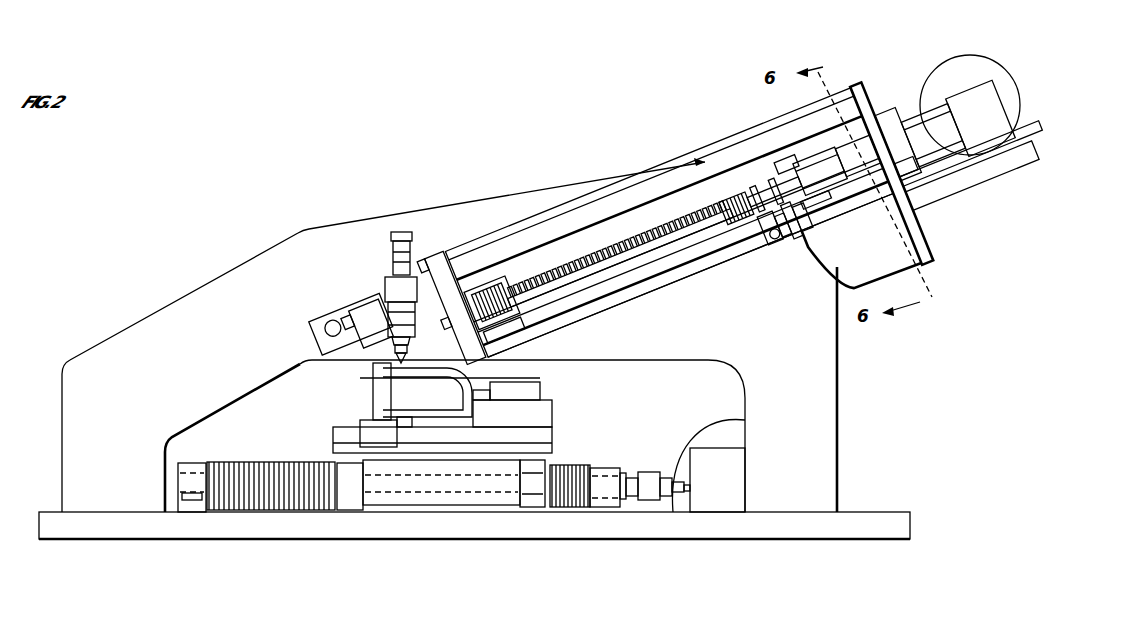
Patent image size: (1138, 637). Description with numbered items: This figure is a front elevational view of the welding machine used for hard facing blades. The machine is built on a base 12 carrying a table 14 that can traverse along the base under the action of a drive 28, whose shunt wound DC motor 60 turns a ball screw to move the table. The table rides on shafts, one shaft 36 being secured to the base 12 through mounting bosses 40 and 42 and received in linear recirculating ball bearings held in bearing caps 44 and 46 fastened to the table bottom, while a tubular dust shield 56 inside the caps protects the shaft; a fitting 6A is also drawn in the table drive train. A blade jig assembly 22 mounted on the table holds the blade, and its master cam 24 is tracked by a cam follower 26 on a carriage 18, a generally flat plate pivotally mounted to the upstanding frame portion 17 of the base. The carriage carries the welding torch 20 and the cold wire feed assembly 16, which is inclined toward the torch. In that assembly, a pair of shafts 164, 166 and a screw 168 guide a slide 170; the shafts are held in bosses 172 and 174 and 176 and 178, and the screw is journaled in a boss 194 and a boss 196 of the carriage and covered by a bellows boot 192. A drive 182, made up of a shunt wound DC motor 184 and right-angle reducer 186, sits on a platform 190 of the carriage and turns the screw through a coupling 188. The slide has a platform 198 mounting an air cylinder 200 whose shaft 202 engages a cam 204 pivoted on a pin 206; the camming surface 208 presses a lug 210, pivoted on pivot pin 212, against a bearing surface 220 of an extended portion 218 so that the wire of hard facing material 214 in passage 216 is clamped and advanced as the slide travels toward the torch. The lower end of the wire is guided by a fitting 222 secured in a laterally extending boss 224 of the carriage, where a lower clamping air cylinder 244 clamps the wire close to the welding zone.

The base 12 is at (912, 534).
The table 14 is at (555, 453).
The cold wire feed assembly 16 is at (853, 137).
The upstanding frame portion 17 is at (828, 440).
The carriage 18 is at (610, 205).
The welding torch 20 is at (388, 257).
The blade jig assembly 22 is at (400, 410).
The master cam 24 is at (528, 378).
The cam follower 26 is at (380, 378).
The drive 28 is at (688, 428).
The shaft 36 is at (480, 490).
The mounting boss 40 is at (193, 507).
The mounting boss 42 is at (600, 505).
The bearing cap 44 is at (345, 505).
The bearing cap 46 is at (530, 505).
The tubular dust shield 56 is at (432, 500).
The shunt wound DC motor 60 is at (715, 418).
The fitting 6A is at (651, 470).
The shaft 164 is at (535, 247).
The shaft 166 is at (617, 288).
The screw 168 is at (660, 283).
The slide 170 is at (783, 157).
The boss 172 is at (438, 260).
The boss 174 is at (878, 127).
The boss 176 is at (540, 378).
The boss 178 is at (927, 197).
The drive 182 is at (1012, 92).
The shunt wound DC motor 184 is at (1005, 76).
The right-angle reducer 186 is at (997, 143).
The coupling 188 is at (910, 140).
The platform 190 is at (988, 173).
The bellows boot 192 is at (482, 287).
The boss 194 is at (455, 307).
The boss 196 is at (898, 190).
The platform 198 is at (893, 178).
The air cylinder 200 is at (808, 175).
The shaft 202 is at (757, 185).
The cam 204 is at (767, 230).
The pin 206 is at (770, 190).
The camming surface 208 is at (760, 243).
The lug 210 is at (780, 252).
The pivot pin 212 is at (781, 251).
The wire of hard facing material 214 is at (652, 247).
The passage 216 is at (820, 200).
The extended portion 218 is at (810, 247).
The bearing surface 220 is at (785, 250).
The fitting 222 is at (402, 408).
The laterally extending boss 224 is at (493, 328).
The lower clamping air cylinder 244 is at (445, 415).